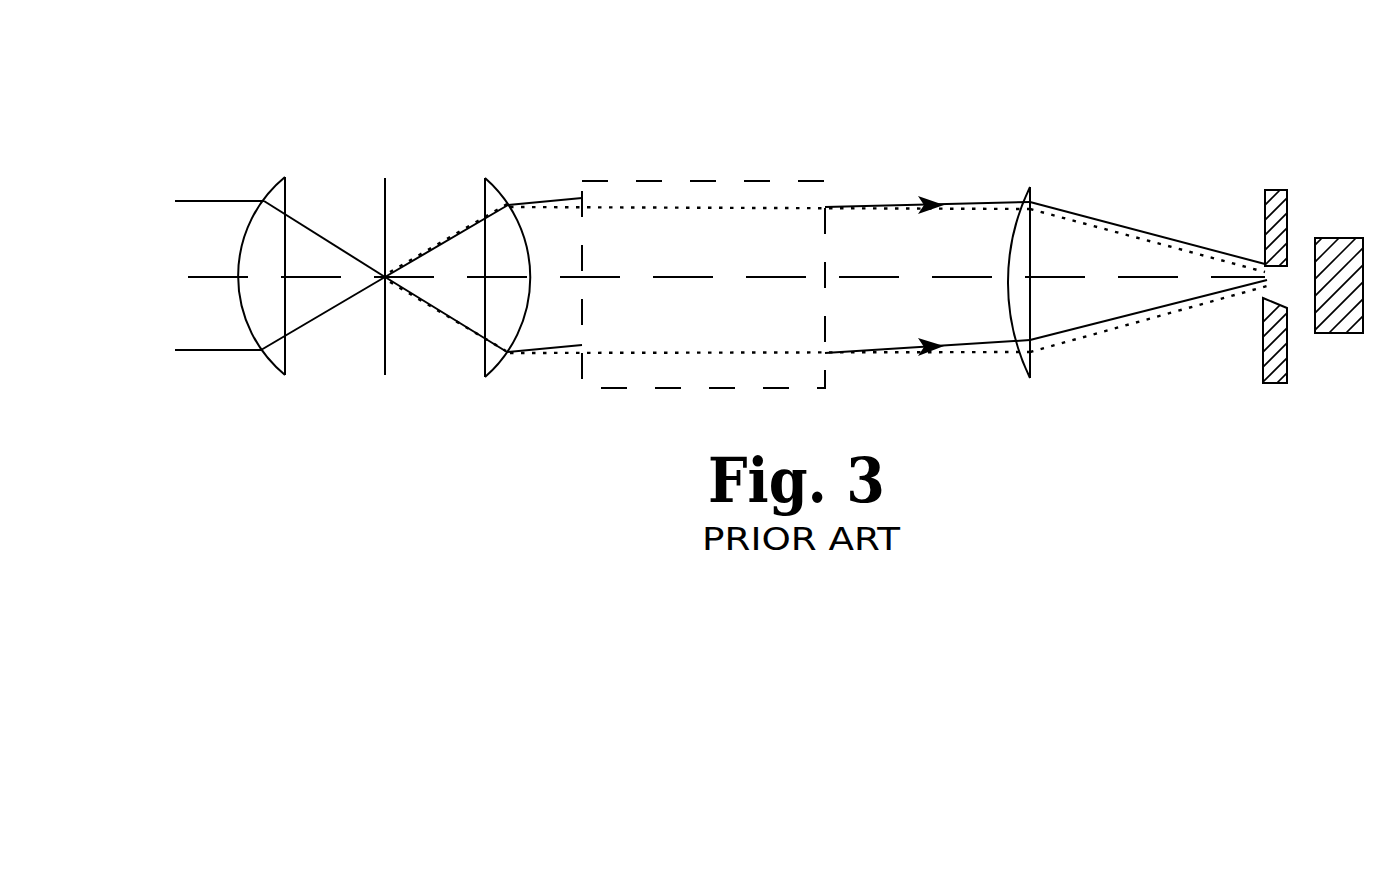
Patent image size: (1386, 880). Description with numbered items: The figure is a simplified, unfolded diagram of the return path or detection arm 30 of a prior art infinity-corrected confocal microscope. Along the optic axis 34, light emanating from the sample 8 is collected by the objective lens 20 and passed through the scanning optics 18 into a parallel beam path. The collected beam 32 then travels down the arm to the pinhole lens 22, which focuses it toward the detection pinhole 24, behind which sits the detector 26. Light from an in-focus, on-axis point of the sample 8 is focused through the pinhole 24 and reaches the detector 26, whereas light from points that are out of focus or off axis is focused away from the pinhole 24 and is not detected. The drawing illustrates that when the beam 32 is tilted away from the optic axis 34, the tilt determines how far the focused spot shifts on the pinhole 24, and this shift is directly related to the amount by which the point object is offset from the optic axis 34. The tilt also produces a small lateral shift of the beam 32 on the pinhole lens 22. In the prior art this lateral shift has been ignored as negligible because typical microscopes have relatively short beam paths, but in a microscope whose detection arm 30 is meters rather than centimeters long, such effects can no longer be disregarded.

The sample 8 is at (385, 185).
The scanning optics 18 is at (582, 186).
The objective lens 20 is at (277, 189).
The pinhole lens 22 is at (1029, 198).
The pinhole 24 is at (1282, 284).
The detector 26 is at (1340, 238).
The return path or arm 30 is at (845, 78).
The beam 32 is at (1198, 244).
The optic axis 34 is at (200, 275).